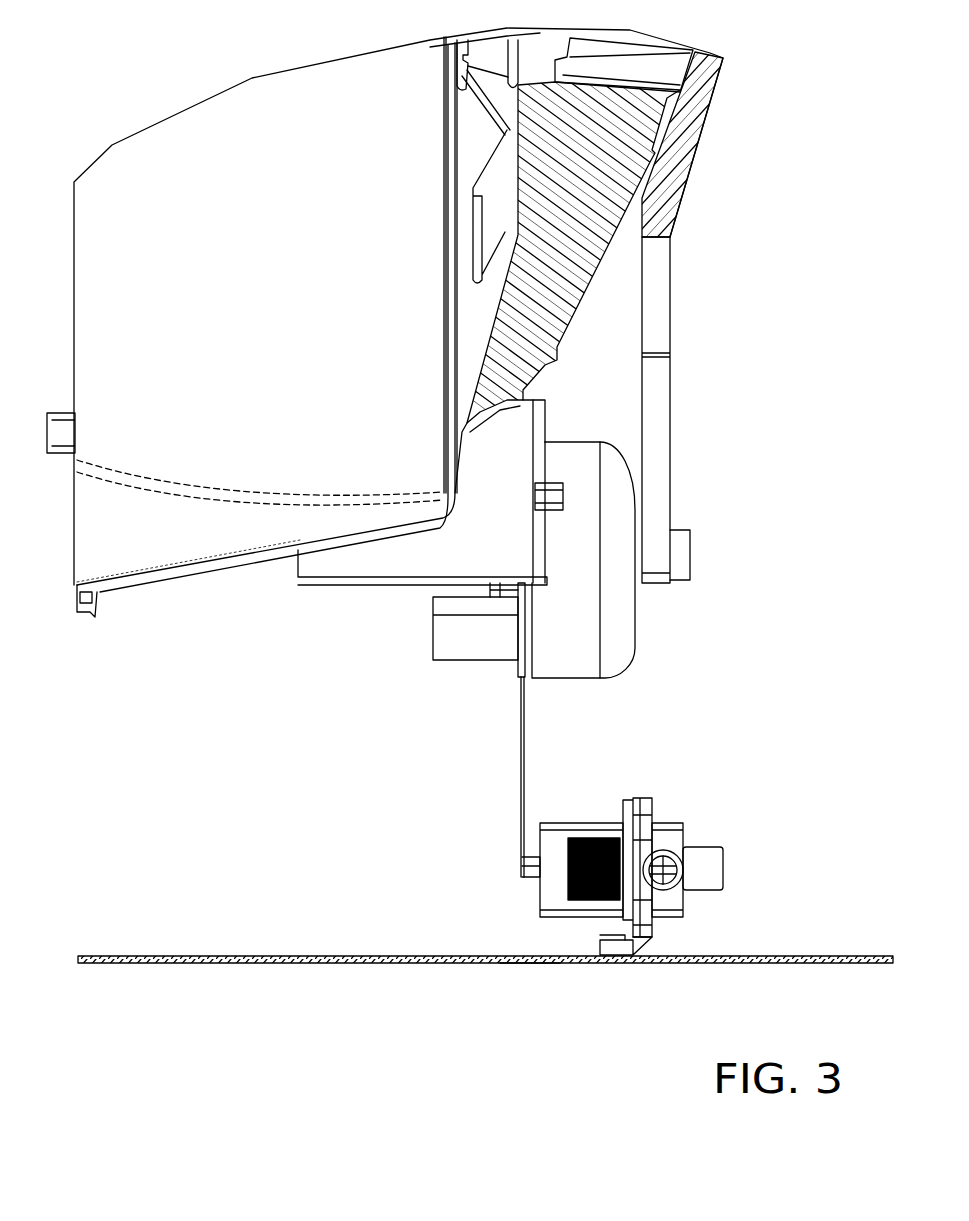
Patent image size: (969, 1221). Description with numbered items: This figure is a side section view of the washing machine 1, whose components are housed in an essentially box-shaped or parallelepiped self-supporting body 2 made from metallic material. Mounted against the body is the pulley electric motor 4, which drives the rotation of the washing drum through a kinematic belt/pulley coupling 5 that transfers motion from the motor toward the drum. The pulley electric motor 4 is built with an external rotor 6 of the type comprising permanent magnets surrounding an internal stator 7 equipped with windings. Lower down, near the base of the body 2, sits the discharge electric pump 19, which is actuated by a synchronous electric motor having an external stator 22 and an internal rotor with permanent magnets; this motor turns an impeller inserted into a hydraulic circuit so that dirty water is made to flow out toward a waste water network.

The washing machine 1 is at (531, 1015).
The self-supporting body 2 is at (93, 963).
The pulley electric motor 4 is at (655, 666).
The kinematic belt/pulley coupling 5 is at (680, 413).
The external rotor 6 is at (645, 619).
The internal stator 7 is at (500, 672).
The discharge electric pump 19 is at (505, 889).
The external stator 22 is at (578, 812).